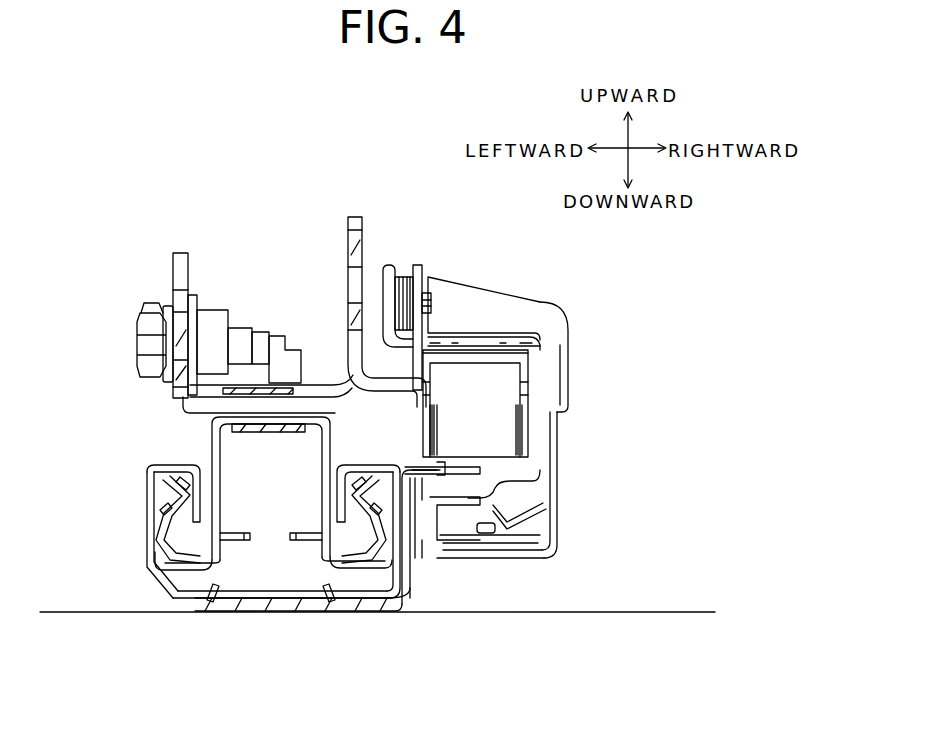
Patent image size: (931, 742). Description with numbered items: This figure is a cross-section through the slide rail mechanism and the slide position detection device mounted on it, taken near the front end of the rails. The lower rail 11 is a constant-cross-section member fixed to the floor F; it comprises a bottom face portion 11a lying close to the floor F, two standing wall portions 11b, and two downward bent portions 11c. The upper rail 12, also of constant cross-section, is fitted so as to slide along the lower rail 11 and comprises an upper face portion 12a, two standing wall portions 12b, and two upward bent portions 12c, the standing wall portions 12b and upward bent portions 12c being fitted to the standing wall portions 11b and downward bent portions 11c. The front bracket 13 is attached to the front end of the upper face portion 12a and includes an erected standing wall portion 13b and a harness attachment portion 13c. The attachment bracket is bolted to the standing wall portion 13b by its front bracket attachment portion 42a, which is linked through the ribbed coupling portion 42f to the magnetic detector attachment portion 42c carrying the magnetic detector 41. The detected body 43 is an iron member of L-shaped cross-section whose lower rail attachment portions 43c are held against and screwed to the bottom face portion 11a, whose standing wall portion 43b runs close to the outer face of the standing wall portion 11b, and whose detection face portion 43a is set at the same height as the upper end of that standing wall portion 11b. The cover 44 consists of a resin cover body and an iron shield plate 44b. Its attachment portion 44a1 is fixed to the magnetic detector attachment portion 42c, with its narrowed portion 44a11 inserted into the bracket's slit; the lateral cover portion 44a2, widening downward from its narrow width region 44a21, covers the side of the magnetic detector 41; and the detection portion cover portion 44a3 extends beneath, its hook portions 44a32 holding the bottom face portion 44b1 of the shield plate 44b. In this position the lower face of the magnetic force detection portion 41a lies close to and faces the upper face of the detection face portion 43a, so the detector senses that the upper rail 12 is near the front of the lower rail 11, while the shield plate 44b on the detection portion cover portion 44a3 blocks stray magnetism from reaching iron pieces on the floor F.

The lower rail 11 is at (230, 556).
The bottom face portion 11a is at (203, 605).
The standing wall portions 11b is at (147, 537).
The downward bent portions 11c is at (190, 470).
The upper rail 12 is at (248, 525).
The upper face portion 12a is at (150, 370).
The standing wall portions 12b is at (232, 432).
The upward bent portions 12c is at (162, 590).
The front bracket 13 is at (248, 287).
The standing wall portion 13b is at (170, 277).
The harness attachment portion 13c is at (367, 233).
The magnetic detector 41 is at (560, 403).
The magnetic force detection portion 41a is at (490, 403).
The front bracket attachment portion 42a is at (195, 300).
The magnetic detector attachment portion 42c is at (382, 322).
The coupling portion 42f is at (325, 383).
The detected body 43 is at (413, 575).
The detection face portion 43a is at (480, 488).
The standing wall portion 43b is at (413, 563).
The lower rail attachment portions 43c is at (290, 612).
The cover 44 is at (520, 420).
The attachment portion 44a1 is at (485, 287).
The narrowed portion 44a11 is at (424, 285).
The lateral cover portion 44a2 is at (560, 455).
The narrow width region 44a21 is at (513, 513).
The detection portion cover portion 44a3 is at (513, 562).
The hook portions 44a32 is at (477, 528).
The shield plate 44b is at (418, 478).
The bottom face portion 44b1 is at (443, 473).
The floor F is at (647, 610).